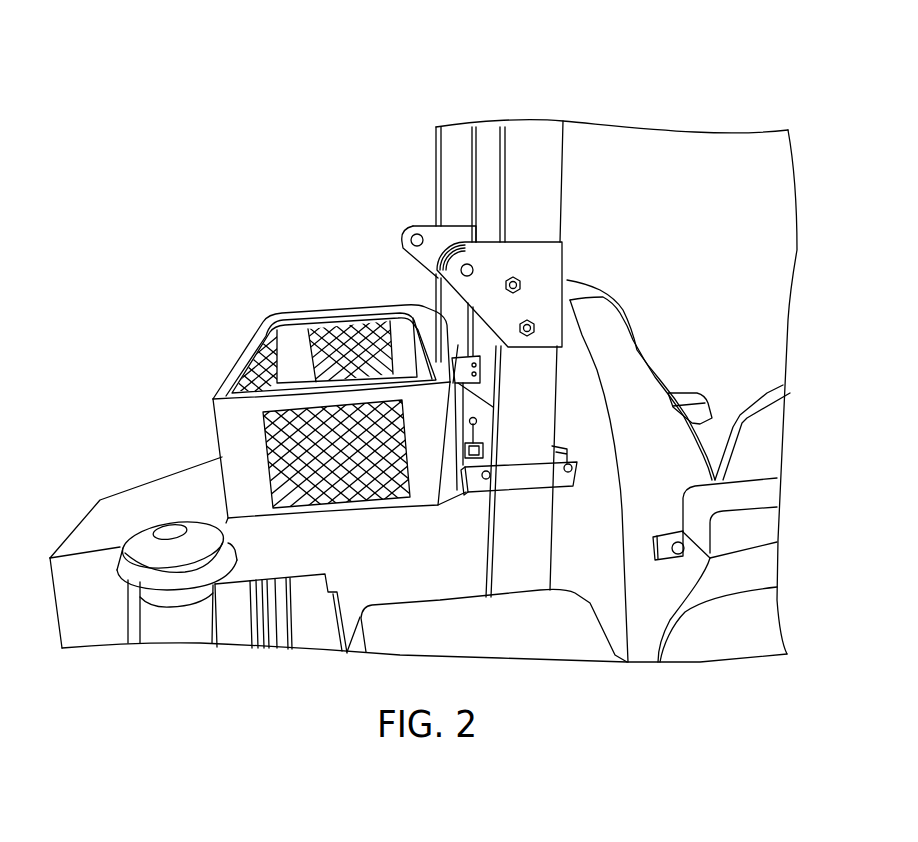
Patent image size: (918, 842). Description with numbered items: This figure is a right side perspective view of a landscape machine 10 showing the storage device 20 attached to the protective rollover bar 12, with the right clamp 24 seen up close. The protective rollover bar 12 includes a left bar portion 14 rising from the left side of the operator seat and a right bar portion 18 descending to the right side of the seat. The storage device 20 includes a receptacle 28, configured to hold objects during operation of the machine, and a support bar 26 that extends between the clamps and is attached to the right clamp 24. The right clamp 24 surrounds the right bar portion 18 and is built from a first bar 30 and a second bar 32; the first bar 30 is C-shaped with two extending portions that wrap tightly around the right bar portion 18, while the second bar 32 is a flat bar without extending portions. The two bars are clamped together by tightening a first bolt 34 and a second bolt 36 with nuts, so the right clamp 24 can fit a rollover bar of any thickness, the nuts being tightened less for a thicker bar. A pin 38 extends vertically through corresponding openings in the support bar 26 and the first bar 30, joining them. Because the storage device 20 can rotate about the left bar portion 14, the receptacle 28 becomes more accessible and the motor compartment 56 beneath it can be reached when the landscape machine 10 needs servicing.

The landscape machine 10 is at (58, 502).
The protective rollover bar 12 is at (557, 140).
The left bar portion 14 is at (447, 172).
The right bar portion 18 is at (535, 163).
The storage device 20 is at (243, 232).
The right clamp 24 is at (534, 508).
The support bar 26 is at (464, 414).
The receptacle 28 is at (313, 323).
The first bar 30 is at (556, 470).
The second bar 32 is at (553, 447).
The first bolt 34 is at (485, 480).
The second bolt 36 is at (570, 474).
The pin 38 is at (466, 440).
The motor compartment 56 is at (170, 497).